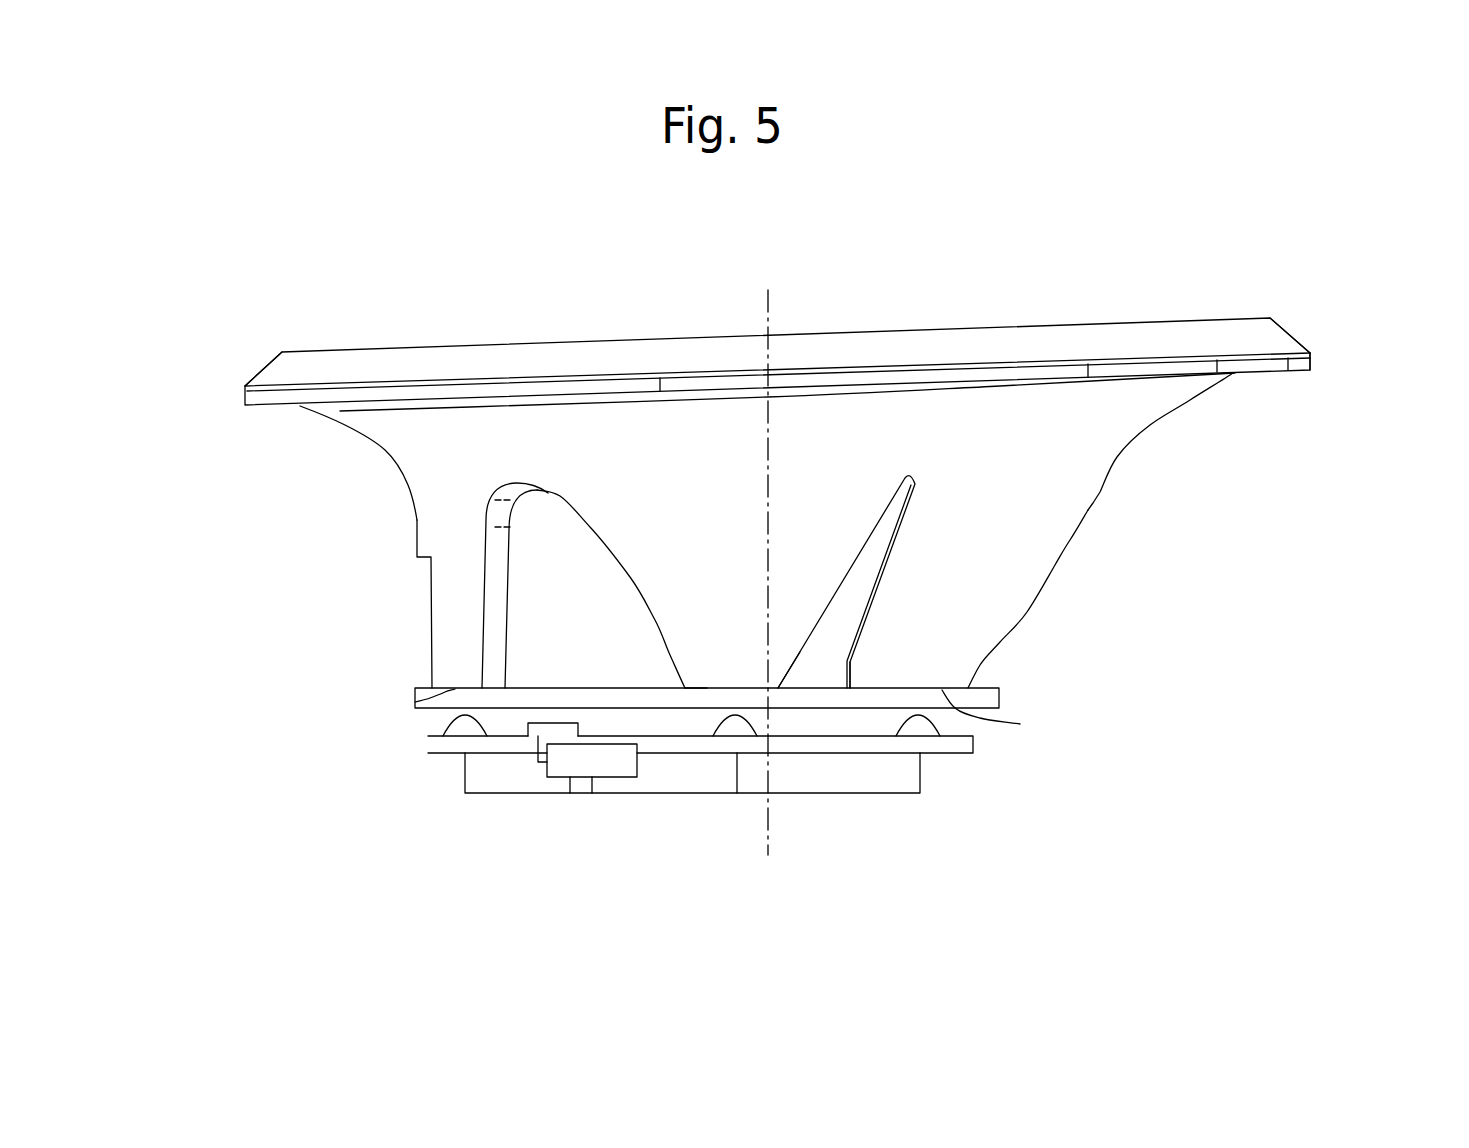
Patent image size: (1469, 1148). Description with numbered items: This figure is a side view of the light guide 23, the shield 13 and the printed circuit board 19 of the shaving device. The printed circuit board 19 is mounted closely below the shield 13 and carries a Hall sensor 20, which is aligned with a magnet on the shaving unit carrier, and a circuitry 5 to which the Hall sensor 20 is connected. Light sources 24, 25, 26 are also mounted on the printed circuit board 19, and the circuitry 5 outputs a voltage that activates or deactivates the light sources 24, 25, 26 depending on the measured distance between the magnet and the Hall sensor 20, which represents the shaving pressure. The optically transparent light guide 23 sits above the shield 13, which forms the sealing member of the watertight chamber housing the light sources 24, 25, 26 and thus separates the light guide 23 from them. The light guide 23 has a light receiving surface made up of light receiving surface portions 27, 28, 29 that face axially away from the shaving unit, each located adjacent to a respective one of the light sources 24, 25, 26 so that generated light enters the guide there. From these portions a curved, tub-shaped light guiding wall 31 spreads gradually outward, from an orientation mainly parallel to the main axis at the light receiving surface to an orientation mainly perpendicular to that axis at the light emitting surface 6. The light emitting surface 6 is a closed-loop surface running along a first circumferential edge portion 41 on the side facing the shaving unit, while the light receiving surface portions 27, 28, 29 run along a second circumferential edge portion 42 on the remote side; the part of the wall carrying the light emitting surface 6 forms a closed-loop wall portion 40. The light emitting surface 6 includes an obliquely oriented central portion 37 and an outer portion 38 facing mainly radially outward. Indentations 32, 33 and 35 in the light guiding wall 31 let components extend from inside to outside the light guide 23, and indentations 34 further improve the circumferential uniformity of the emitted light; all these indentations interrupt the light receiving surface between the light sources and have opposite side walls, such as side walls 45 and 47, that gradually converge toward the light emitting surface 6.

The circuitry 5 is at (573, 763).
The light emitting surface 6 is at (258, 367).
The shield 13 is at (978, 697).
The printed circuit board 19 is at (982, 746).
The Hall sensor 20 is at (533, 728).
The light guide 23 is at (1110, 498).
The light source 24 is at (927, 723).
The light source 25 is at (729, 729).
The light source 26 is at (450, 725).
The light receiving surface portion 27 is at (1020, 724).
The light receiving surface portion 28 is at (707, 690).
The light receiving surface portion 29 is at (415, 702).
The light guiding wall 31 is at (610, 458).
The indentation 32 is at (430, 588).
The indentation 33 is at (565, 623).
The indentation 34 is at (852, 607).
The indentation 35 is at (1068, 542).
The central portion 37 is at (1292, 336).
The outer portion 38 is at (1313, 360).
The closed-loop wall portion 40 is at (1090, 415).
The first circumferential edge portion 41 is at (308, 351).
The second circumferential edge portion 42 is at (873, 690).
The side wall 45 is at (497, 542).
The side wall 47 is at (817, 633).